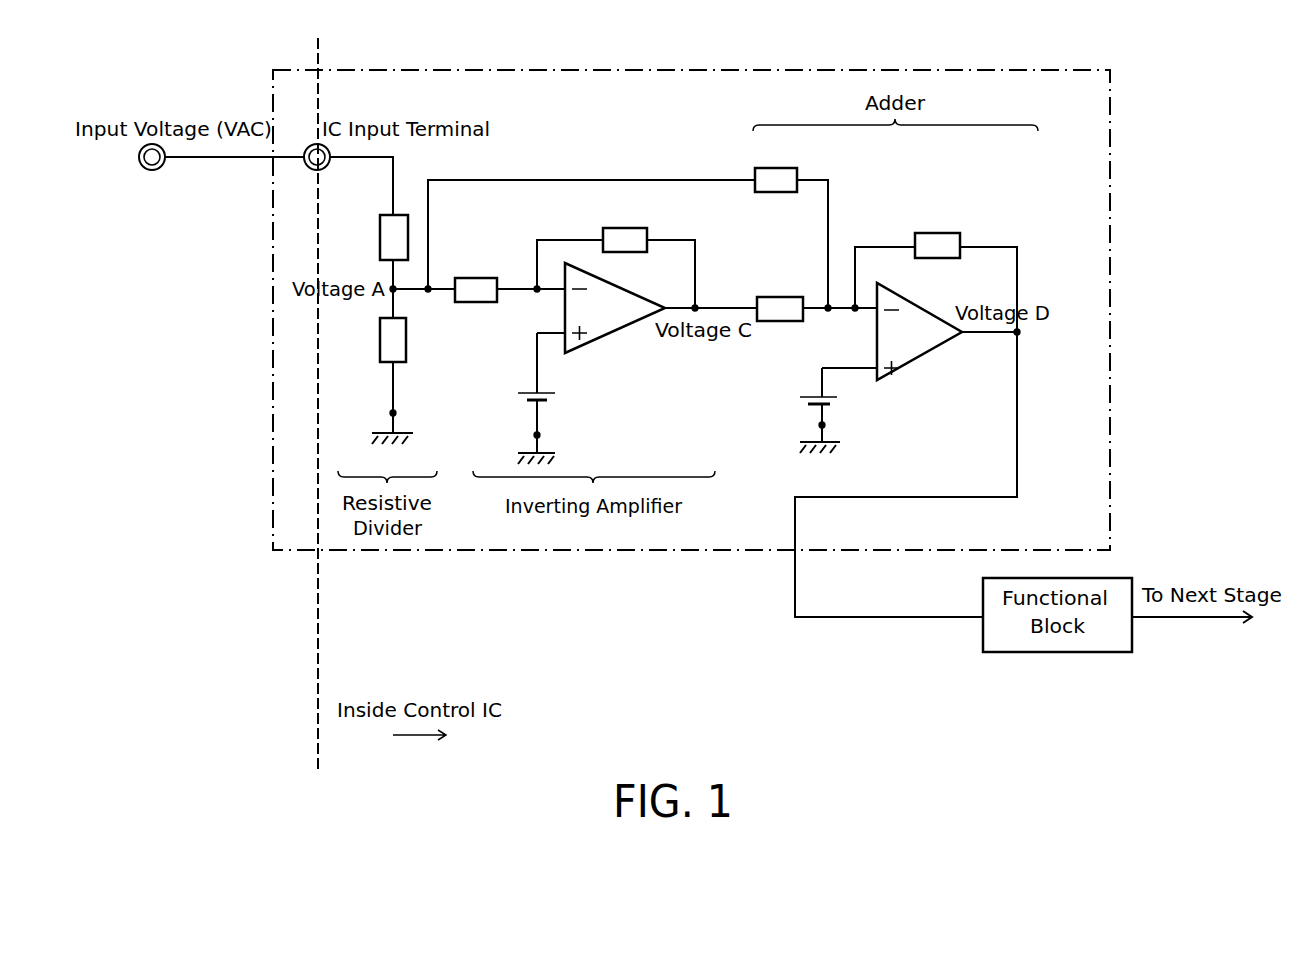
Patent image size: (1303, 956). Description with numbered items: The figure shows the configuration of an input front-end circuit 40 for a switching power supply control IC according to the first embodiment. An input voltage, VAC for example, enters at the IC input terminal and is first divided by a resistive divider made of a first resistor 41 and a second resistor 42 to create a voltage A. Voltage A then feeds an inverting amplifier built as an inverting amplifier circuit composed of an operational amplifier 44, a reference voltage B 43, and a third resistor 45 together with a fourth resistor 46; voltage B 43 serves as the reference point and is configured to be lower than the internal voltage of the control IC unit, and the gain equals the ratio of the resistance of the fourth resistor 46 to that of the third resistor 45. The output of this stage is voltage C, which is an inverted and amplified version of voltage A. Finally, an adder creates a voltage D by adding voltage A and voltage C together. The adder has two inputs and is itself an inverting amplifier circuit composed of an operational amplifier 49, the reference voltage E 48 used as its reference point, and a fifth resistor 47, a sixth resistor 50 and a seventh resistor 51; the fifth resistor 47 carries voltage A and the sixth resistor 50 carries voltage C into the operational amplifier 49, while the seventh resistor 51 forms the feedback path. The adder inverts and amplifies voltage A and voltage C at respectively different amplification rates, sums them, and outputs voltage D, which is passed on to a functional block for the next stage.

The input front-end circuit 40 is at (383, 69).
The resistor R1 41 is at (380, 221).
The resistor R2 42 is at (380, 360).
The voltage B 43 is at (519, 396).
The operational amplifier 44 is at (616, 331).
The resistor R3 45 is at (476, 303).
The resistor R4 46 is at (632, 253).
The resistor R5 47 is at (777, 193).
The reference voltage E 48 is at (806, 400).
The operational amplifier 49 is at (930, 351).
The resistor R6 50 is at (781, 321).
The resistor R7 51 is at (938, 259).